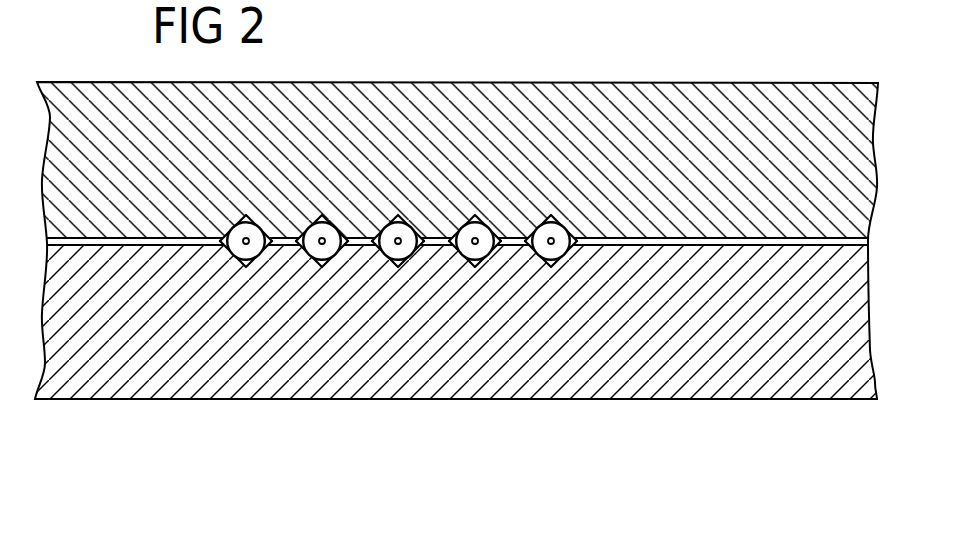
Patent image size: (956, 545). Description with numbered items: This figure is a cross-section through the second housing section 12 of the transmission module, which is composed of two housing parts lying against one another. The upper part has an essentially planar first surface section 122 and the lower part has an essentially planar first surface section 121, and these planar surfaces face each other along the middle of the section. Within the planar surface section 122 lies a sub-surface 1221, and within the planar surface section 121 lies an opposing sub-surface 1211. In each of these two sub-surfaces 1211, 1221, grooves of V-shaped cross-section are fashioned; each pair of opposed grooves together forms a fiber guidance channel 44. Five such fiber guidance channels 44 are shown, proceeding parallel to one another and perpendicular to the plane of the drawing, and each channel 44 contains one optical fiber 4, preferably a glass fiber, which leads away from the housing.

The second housing section 12 is at (372, 420).
The first surface section 121 is at (762, 440).
The first surface section 122 is at (347, 101).
The sub-surface 1211 is at (645, 232).
The sub-surface 1221 is at (181, 250).
The optical fiber 4 is at (480, 232).
The fiber guidance channel 44 is at (557, 268).